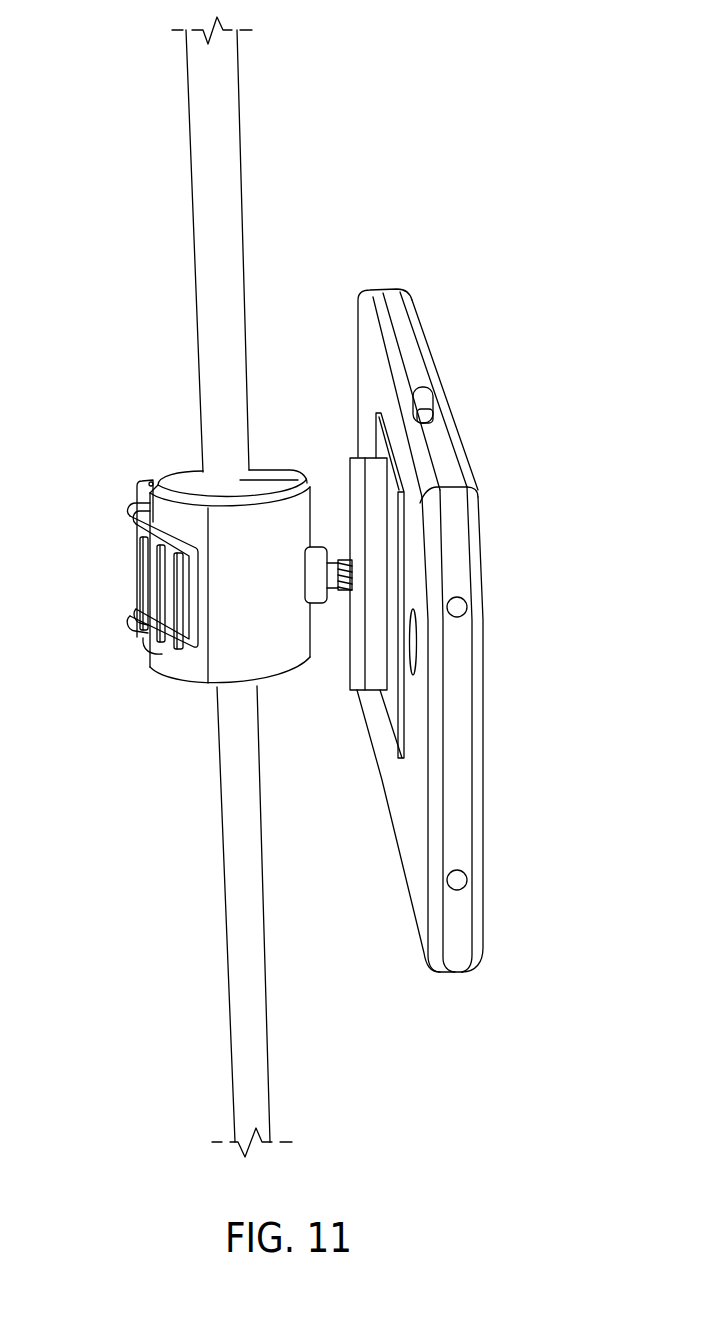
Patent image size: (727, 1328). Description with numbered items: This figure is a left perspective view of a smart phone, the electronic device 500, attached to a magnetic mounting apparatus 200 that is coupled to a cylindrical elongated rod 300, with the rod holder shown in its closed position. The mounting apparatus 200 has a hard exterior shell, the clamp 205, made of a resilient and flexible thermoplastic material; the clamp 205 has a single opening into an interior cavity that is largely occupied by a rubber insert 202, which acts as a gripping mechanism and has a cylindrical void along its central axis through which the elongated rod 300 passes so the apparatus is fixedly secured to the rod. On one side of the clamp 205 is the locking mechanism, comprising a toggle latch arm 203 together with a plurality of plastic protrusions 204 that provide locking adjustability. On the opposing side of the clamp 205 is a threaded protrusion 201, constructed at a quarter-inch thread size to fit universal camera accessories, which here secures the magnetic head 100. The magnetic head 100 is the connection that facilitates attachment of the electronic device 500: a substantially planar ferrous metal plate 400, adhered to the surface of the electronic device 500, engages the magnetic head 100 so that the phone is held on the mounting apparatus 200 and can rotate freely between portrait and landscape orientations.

The magnetic head 100 is at (347, 715).
The magnetic mounting apparatus 200 is at (182, 574).
The threaded protrusion 201 is at (333, 583).
The rubber insert 202 is at (270, 471).
The toggle latch arm 203 is at (133, 519).
The plastic protrusions 204 is at (148, 590).
The clamp 205 is at (178, 664).
The elongated rod 300 is at (262, 146).
The ferrous metal plate 400 is at (376, 441).
The electronic device 500 is at (474, 386).